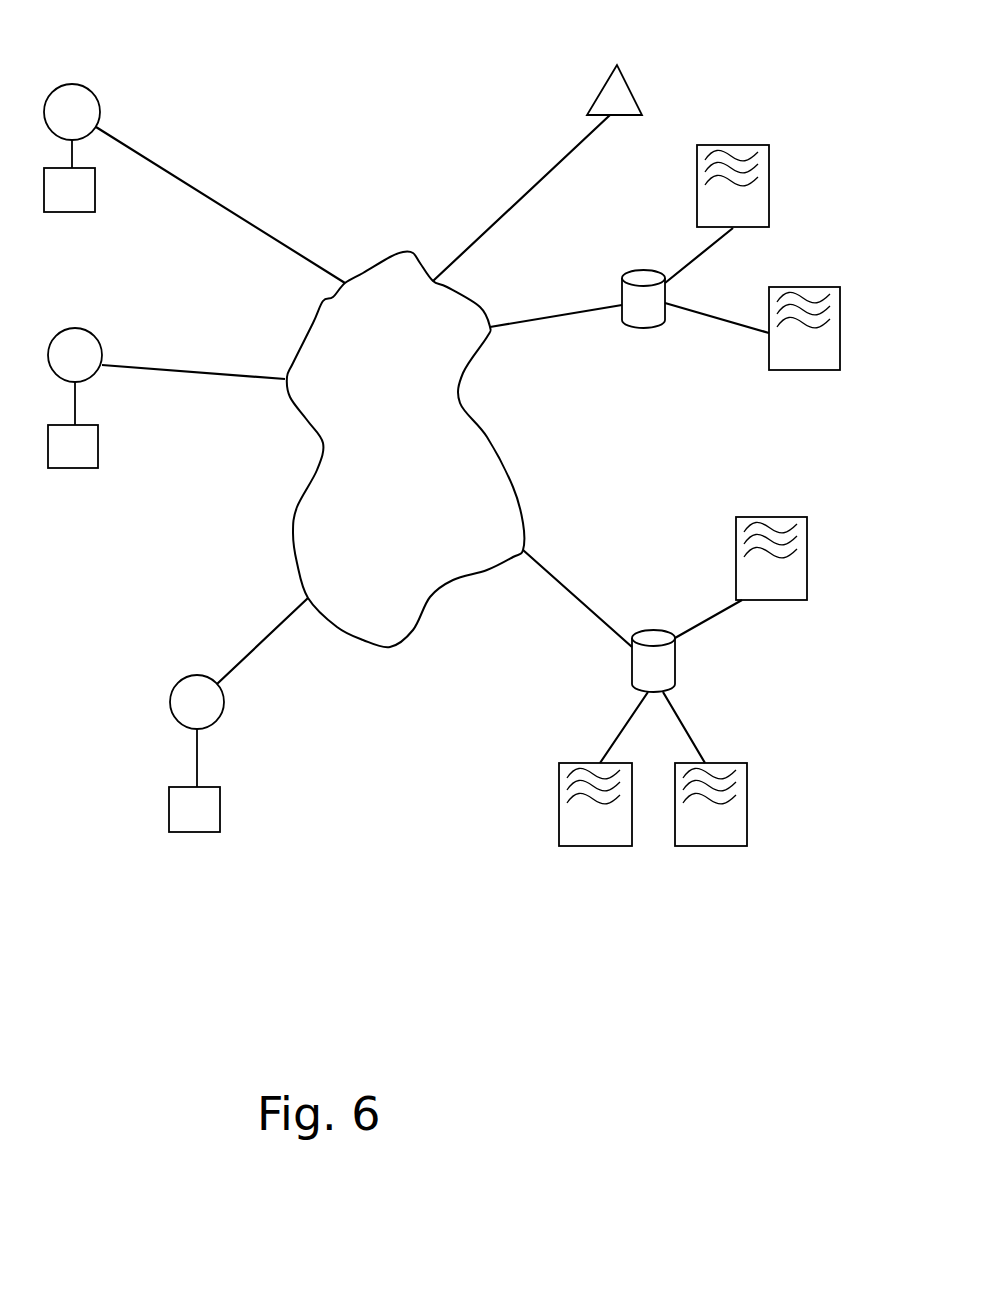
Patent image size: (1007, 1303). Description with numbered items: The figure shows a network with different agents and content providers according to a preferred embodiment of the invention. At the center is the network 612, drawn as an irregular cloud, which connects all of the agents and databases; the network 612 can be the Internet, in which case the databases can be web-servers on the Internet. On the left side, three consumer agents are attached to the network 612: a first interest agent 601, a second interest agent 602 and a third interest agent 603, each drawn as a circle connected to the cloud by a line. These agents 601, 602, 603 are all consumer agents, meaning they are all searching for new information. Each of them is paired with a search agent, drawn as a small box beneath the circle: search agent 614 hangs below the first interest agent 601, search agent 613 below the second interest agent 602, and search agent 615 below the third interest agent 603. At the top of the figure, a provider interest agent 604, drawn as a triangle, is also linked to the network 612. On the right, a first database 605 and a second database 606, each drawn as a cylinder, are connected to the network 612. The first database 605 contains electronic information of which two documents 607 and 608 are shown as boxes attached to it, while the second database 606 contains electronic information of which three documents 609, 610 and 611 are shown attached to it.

The first interest agent 601 is at (218, 718).
The second interest agent 602 is at (67, 330).
The third interest agent 603 is at (68, 84).
The provider interest agent 604 is at (613, 66).
The first database 605 is at (652, 330).
The second database 606 is at (675, 670).
The document 607 is at (803, 287).
The document 608 is at (750, 145).
The document 609 is at (760, 517).
The document 610 is at (743, 847).
The document 611 is at (593, 848).
The network 612 is at (415, 253).
The search agent 613 is at (77, 468).
The search agent 614 is at (197, 832).
The search agent 615 is at (72, 212).